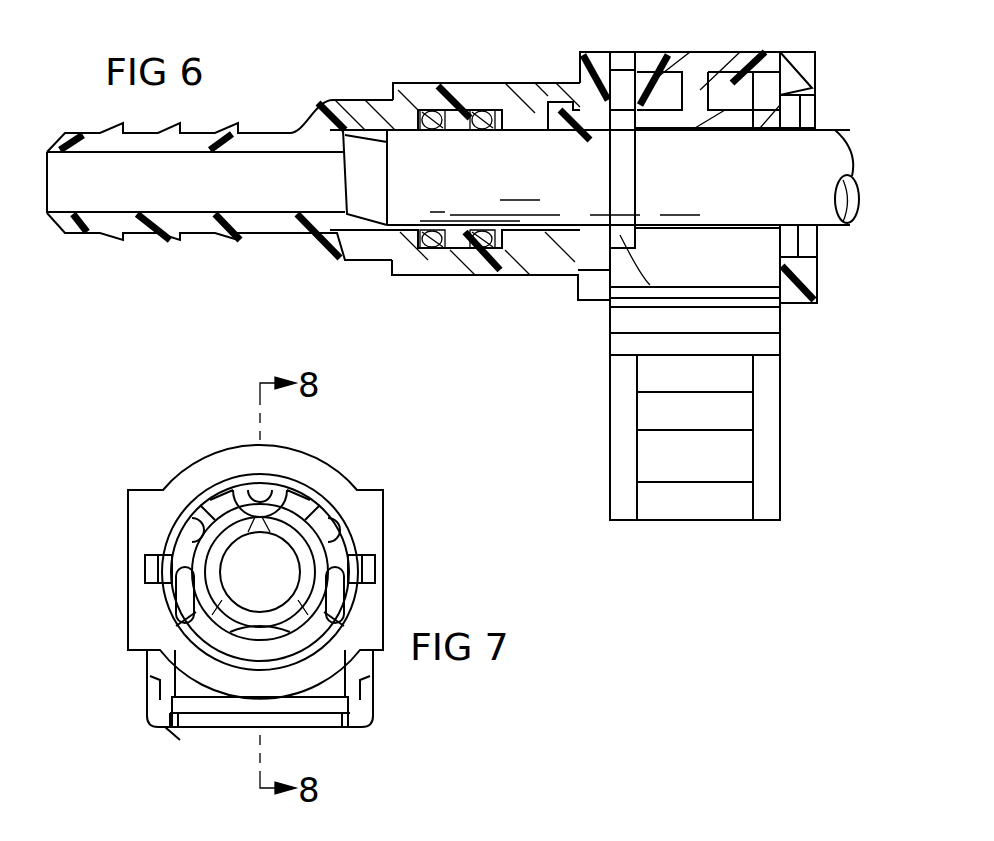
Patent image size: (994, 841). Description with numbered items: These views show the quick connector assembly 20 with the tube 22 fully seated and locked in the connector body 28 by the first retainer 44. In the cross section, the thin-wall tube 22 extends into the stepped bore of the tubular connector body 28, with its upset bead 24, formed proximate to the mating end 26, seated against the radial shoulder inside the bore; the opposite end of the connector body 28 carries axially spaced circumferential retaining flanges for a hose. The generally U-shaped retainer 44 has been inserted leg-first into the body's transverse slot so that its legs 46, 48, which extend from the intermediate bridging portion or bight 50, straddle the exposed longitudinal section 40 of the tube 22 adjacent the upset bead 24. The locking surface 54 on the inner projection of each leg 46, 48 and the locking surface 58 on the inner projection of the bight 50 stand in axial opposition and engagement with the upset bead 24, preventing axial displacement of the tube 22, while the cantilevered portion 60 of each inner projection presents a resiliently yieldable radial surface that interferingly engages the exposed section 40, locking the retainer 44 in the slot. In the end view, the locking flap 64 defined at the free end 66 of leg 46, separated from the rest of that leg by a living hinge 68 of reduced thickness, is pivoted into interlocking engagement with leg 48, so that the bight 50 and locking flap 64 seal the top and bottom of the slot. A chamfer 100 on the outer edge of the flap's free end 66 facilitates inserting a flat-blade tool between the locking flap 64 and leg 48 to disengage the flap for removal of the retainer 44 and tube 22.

In FIG. 7, the quick connector assembly 20 is at (105, 472).
In FIG. 6, the tube 22 is at (842, 126).
In FIG. 7, the tube 22 is at (318, 548).
In FIG. 6, the upset bead 24 is at (625, 240).
In FIG. 7, the upset bead 24 is at (293, 520).
In FIG. 6, the mating end 26 is at (358, 132).
In FIG. 6, the connector body 28 is at (344, 275).
In FIG. 7, the connector body 28 is at (105, 636).
In FIG. 6, the exposed longitudinal section 40 is at (745, 230).
In FIG. 7, the exposed longitudinal section 40 is at (350, 620).
In FIG. 6, the retainer 44 is at (650, 42).
In FIG. 7, the retainer 44 is at (130, 682).
In FIG. 6, the leg 46 is at (783, 318).
In FIG. 7, the leg 46 is at (360, 692).
In FIG. 7, the leg 48 is at (163, 702).
In FIG. 6, the bight 50 is at (771, 80).
In FIG. 6, the locking surface 54 is at (600, 270).
In FIG. 6, the locking surface 58 is at (622, 118).
In FIG. 6, the cantilevered portion 60 is at (790, 256).
In FIG. 6, the locking flap 64 is at (768, 466).
In FIG. 7, the locking flap 64 is at (235, 722).
In FIG. 7, the free end 66 is at (178, 731).
In FIG. 6, the living hinge 68 is at (784, 348).
In FIG. 7, the living hinge 68 is at (350, 732).
In FIG. 7, the chamfer 100 is at (176, 742).